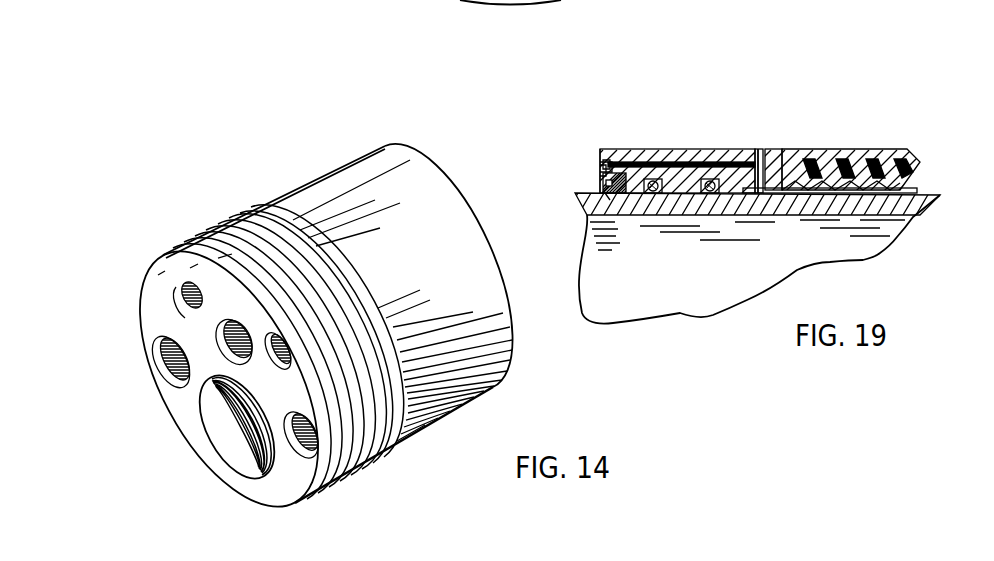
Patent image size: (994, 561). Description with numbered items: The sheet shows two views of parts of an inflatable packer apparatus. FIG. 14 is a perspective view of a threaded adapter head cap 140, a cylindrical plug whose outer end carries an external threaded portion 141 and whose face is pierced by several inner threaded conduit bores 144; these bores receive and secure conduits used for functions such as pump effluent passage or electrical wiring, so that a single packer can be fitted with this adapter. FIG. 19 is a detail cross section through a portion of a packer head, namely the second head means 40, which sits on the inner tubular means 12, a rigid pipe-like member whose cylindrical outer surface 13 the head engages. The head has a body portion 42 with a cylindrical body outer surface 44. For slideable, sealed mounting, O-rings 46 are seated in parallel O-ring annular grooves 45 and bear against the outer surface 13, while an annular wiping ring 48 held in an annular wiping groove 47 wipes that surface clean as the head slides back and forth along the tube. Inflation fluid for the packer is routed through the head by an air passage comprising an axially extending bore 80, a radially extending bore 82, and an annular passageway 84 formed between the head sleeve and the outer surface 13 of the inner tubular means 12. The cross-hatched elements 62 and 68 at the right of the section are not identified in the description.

In FIG. 14, the threaded adapter head cap 140 is at (433, 423).
In FIG. 14, the external threaded portion 141 is at (353, 473).
In FIG. 14, the inner threaded conduit bores 144 is at (300, 445).
In FIG. 19, the second head means 40 is at (624, 67).
In FIG. 19, the inner tubular means 12 is at (580, 202).
In FIG. 19, the cylindrical outer surface 13 is at (600, 185).
In FIG. 19, the body portion 42 is at (648, 149).
In FIG. 19, the cylindrical body outer surface 44 is at (622, 149).
In FIG. 19, the O-ring annular grooves 45 is at (658, 194).
In FIG. 19, the O-rings 46 is at (706, 195).
In FIG. 19, the annular wiping groove 47 is at (603, 170).
In FIG. 19, the annular wiping ring 48 is at (612, 197).
In FIG. 19, the clamp block 62 is at (776, 149).
In FIG. 19, the serrated locking member 68 is at (862, 149).
In FIG. 19, the axially extending bore 80 is at (693, 163).
In FIG. 19, the radially extending bore 82 is at (759, 149).
In FIG. 19, the annular passageway 84 is at (790, 193).